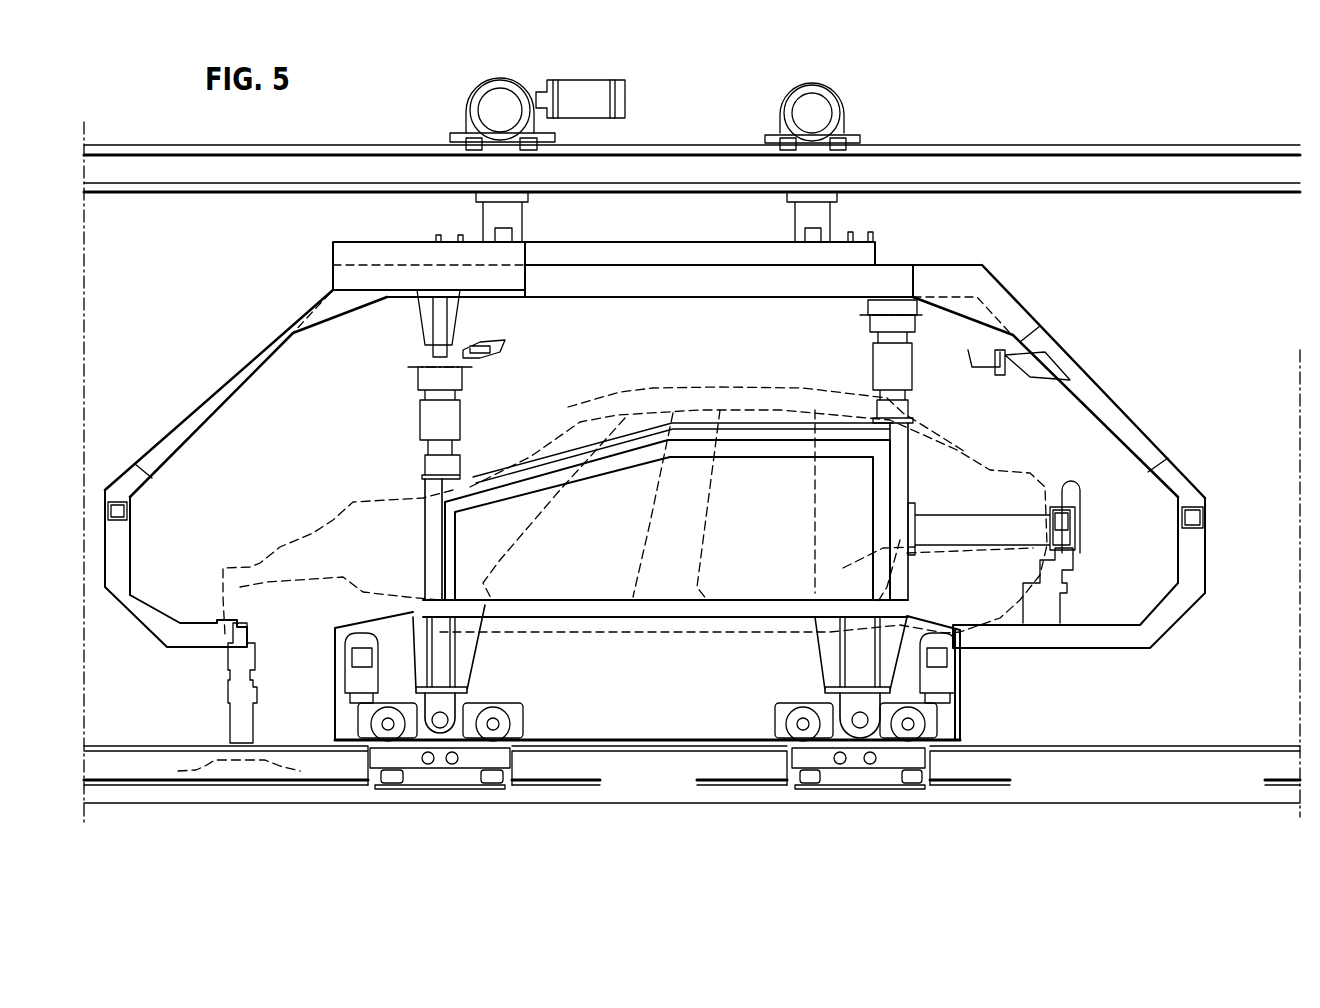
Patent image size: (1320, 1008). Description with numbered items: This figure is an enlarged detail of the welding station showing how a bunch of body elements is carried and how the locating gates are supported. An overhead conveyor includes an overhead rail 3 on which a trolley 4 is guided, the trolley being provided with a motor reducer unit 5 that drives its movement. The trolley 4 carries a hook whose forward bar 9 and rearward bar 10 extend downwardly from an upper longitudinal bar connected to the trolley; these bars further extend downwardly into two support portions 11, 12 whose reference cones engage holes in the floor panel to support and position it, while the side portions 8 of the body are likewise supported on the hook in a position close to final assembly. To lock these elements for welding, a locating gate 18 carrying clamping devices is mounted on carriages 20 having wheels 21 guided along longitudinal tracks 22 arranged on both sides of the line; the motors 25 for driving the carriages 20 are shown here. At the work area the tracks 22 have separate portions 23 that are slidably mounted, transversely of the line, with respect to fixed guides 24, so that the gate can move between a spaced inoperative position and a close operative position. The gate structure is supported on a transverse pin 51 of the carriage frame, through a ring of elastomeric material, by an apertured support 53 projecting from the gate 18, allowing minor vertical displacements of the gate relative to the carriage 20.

The overhead rail 3 is at (905, 163).
The trolley 4 is at (659, 253).
The motor reducer unit 5 is at (540, 92).
The side portions 8 is at (962, 460).
The forward bar 9 is at (253, 357).
The rearward bar 10 is at (1107, 400).
The support portion 11 is at (190, 637).
The support portion 12 is at (1062, 637).
The locating gate 18 is at (545, 468).
The carriage 20 is at (765, 712).
The wheels 21 is at (358, 733).
The longitudinal tracks 22 is at (148, 760).
The separate portions 23 is at (437, 770).
The fixed guides 24 is at (392, 788).
The motors 25 is at (357, 658).
The transverse pin 51 is at (450, 723).
The apertured support 53 is at (468, 683).